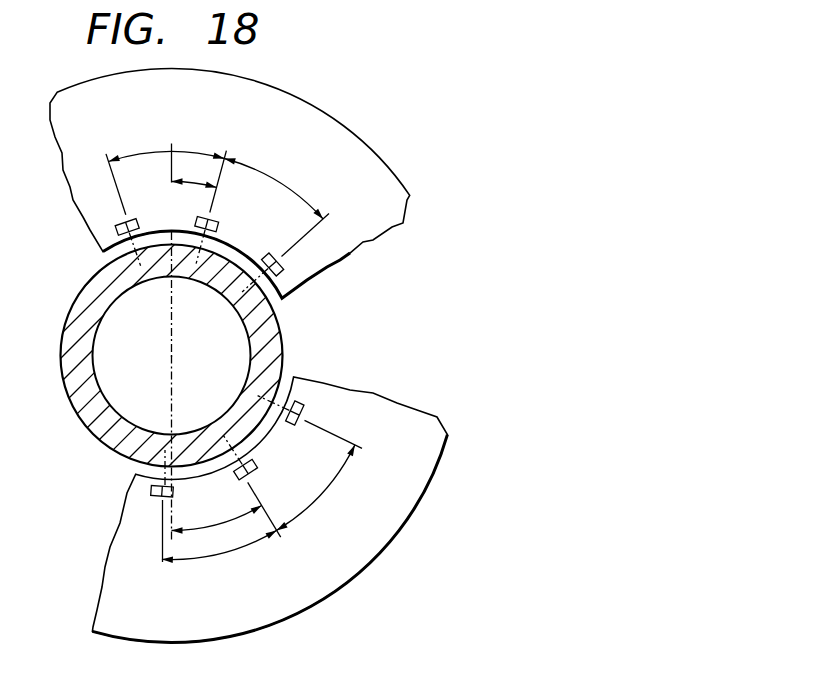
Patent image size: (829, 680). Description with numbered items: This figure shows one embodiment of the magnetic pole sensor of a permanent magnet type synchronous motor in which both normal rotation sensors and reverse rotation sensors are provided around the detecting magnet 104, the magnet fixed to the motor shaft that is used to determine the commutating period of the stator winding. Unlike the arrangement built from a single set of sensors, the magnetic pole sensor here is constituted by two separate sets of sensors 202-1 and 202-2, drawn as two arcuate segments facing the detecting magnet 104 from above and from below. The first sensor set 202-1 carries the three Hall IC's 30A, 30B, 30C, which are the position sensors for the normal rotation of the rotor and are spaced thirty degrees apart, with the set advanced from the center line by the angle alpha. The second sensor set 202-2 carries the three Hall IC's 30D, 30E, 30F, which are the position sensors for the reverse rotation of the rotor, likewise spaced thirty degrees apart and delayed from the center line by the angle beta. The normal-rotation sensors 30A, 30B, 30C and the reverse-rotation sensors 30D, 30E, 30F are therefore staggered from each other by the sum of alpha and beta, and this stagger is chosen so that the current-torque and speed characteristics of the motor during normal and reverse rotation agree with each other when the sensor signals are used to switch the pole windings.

The Hall IC 30A is at (128, 214).
The Hall IC 30B is at (219, 219).
The Hall IC 30C is at (268, 256).
The Hall IC 30D is at (303, 408).
The Hall IC 30E is at (254, 468).
The Hall IC 30F is at (160, 497).
The detecting magnet 104 is at (280, 346).
The sensor set 202-1 is at (393, 223).
The sensor set 202-2 is at (348, 583).